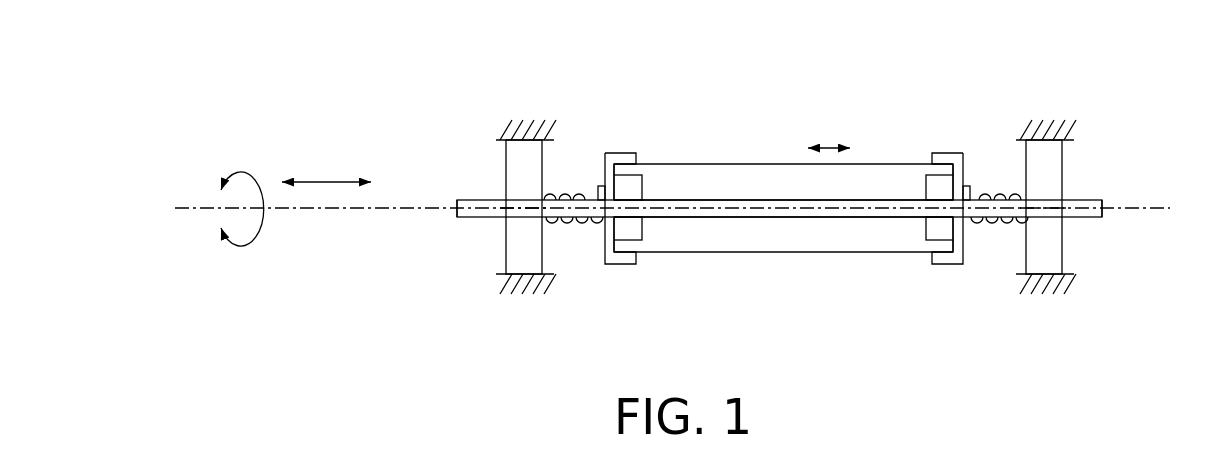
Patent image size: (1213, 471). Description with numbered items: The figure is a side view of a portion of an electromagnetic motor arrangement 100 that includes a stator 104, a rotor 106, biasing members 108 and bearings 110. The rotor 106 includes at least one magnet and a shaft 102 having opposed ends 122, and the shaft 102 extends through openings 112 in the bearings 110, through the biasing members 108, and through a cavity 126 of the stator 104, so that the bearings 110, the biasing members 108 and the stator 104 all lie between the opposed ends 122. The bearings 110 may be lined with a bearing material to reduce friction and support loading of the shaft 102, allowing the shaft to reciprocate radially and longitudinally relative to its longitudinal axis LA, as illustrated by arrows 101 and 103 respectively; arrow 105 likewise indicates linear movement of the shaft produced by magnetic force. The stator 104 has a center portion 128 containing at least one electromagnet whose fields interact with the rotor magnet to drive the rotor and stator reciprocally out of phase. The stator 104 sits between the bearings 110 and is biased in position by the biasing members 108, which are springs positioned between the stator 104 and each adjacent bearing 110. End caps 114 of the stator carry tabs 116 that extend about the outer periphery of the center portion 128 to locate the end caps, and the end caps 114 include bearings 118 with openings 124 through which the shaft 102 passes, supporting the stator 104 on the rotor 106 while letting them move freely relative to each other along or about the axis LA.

The electromagnetic motor arrangement 100 is at (70, 77).
The arrow 101 is at (241, 248).
The shaft 102 is at (466, 197).
The arrow 103 is at (326, 178).
The stator 104 is at (688, 163).
The arrow 105 is at (830, 140).
The rotor 106 is at (777, 200).
The biasing members 108 is at (575, 232).
The bearings 110 is at (513, 162).
The openings 112 is at (504, 220).
The end caps 114 is at (608, 265).
The tabs 116 is at (627, 153).
The bearings 118 is at (586, 188).
The opposed ends 122 is at (457, 212).
The openings 124 is at (598, 191).
The cavity 126 is at (728, 178).
The center portion 128 is at (804, 254).
The longitudinal axis LA is at (178, 212).